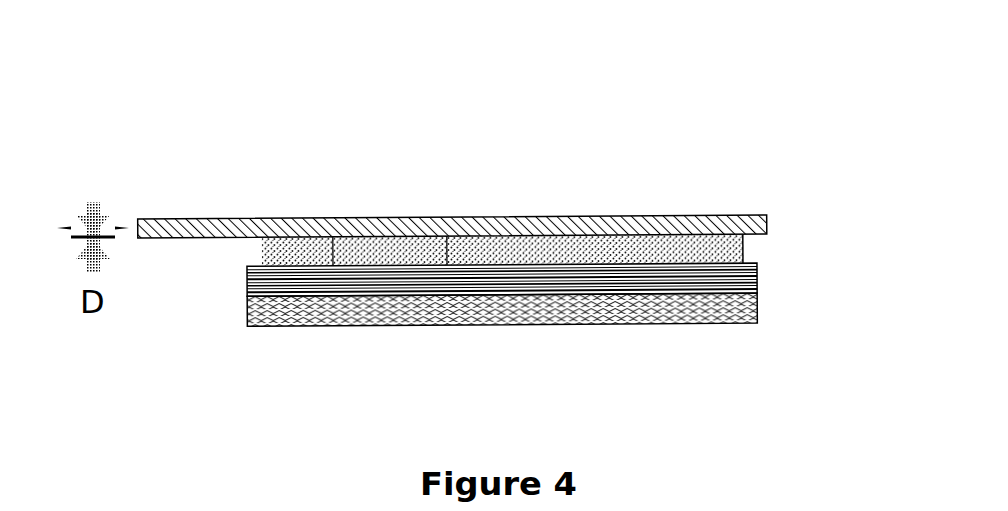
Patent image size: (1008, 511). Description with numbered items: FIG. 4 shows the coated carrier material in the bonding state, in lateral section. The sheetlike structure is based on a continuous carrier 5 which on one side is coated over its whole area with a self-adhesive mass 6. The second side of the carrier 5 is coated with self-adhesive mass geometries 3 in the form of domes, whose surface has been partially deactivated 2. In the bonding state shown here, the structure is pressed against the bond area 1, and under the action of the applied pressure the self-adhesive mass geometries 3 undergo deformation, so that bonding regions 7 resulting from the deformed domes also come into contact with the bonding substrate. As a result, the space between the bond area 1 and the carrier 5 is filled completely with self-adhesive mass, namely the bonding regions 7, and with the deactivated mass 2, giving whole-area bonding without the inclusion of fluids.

The bond area 1 is at (763, 217).
The partially deactivated surface 2 is at (712, 239).
The self-adhesive mass geometries 3 is at (713, 253).
The continuous carrier 5 is at (740, 279).
The self-adhesive mass 6 is at (617, 303).
The bonding regions 7 is at (333, 265).